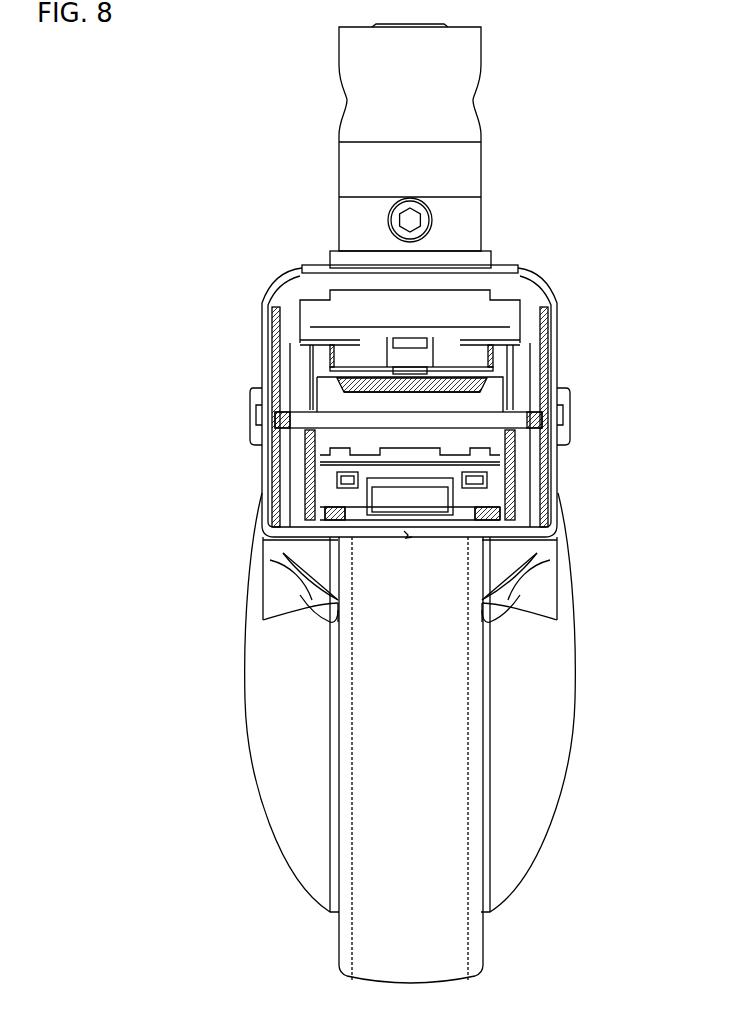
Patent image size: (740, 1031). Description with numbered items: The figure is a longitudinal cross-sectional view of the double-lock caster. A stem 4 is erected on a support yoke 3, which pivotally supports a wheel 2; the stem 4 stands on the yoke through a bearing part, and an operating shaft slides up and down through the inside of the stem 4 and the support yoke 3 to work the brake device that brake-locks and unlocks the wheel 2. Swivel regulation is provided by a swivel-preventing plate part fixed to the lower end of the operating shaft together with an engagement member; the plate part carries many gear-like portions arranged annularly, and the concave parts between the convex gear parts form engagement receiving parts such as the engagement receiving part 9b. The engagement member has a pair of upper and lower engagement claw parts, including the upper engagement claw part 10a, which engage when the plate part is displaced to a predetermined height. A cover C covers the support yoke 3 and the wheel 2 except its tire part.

The wheel 2 is at (430, 956).
The support yoke 3 is at (518, 317).
The stem 4 is at (482, 170).
The engagement receiving part 9b is at (445, 392).
The upper engagement claw part 10a is at (415, 348).
The cover C is at (253, 701).